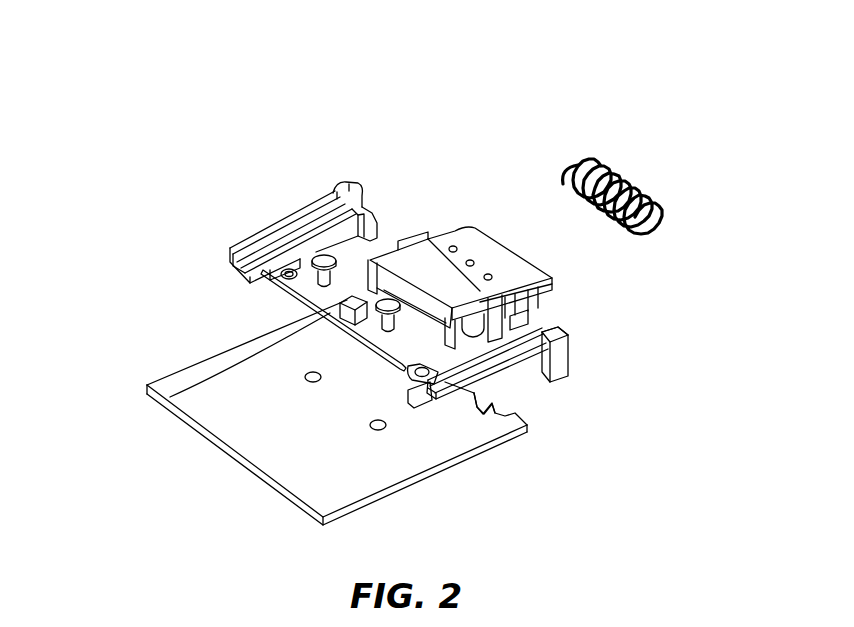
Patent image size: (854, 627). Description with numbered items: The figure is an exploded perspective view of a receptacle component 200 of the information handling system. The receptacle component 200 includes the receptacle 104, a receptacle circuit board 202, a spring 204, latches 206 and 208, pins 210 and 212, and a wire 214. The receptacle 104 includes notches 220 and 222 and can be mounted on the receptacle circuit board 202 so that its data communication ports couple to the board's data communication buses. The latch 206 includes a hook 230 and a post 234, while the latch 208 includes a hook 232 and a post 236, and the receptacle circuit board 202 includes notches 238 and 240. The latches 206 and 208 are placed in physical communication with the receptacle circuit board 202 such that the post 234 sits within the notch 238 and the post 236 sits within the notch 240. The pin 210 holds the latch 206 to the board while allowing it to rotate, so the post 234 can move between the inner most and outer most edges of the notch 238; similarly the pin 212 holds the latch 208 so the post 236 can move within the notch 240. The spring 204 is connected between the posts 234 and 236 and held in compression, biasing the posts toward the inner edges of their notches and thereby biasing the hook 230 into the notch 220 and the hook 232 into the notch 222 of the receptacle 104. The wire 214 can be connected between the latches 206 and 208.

The receptacle component 200 is at (611, 104).
The receptacle circuit board 202 is at (360, 466).
The spring 204 is at (636, 189).
The latch 206 is at (268, 272).
The latch 208 is at (539, 394).
The pin 210 is at (320, 256).
The pin 212 is at (170, 397).
The wire 214 is at (290, 289).
The notch 220 is at (509, 248).
The notch 222 is at (528, 323).
The hook 230 is at (377, 220).
The hook 232 is at (567, 334).
The post 234 is at (346, 162).
The post 236 is at (565, 360).
The notch 238 is at (353, 310).
The notch 240 is at (527, 430).
The receptacle 104 is at (494, 253).